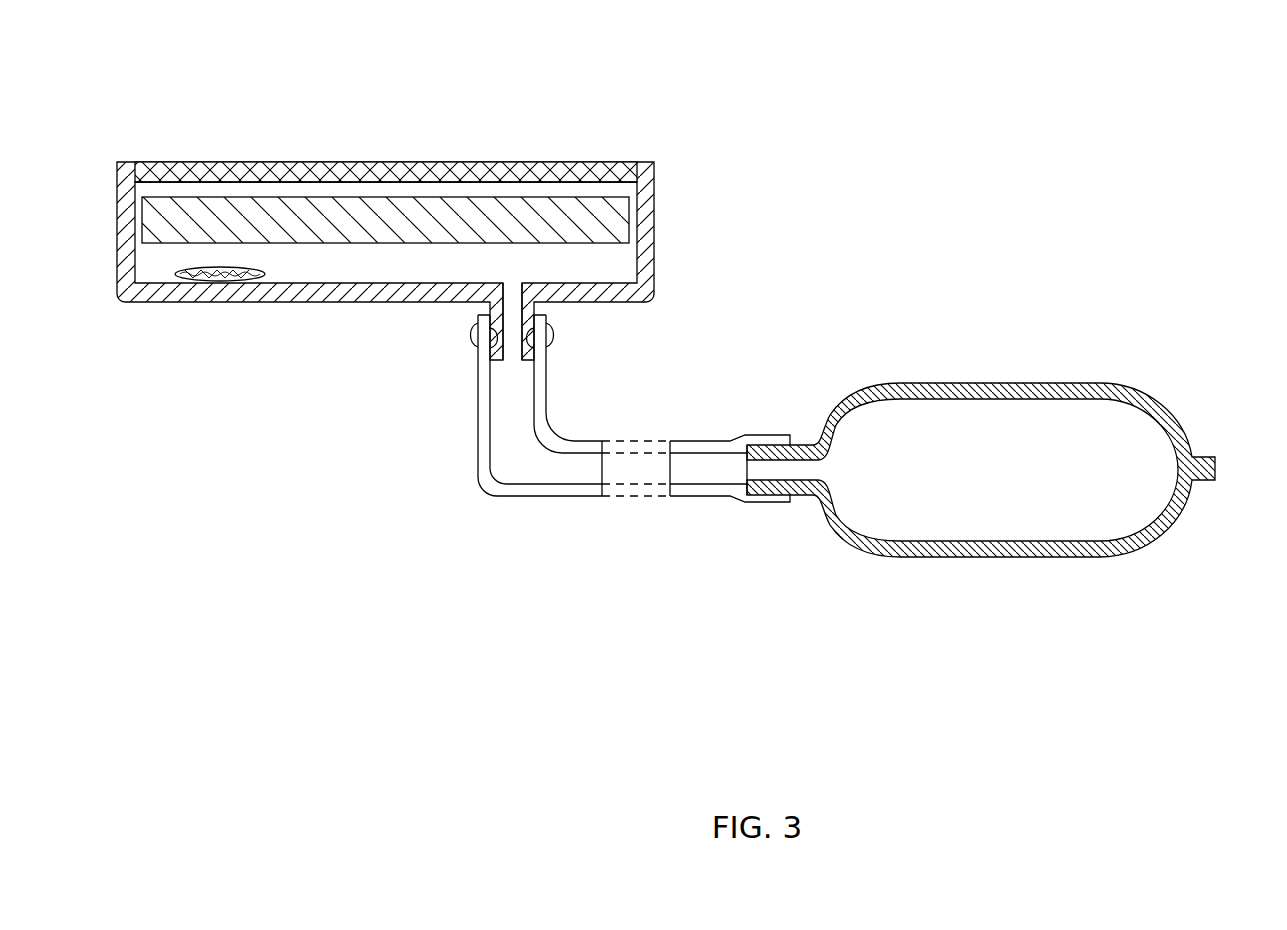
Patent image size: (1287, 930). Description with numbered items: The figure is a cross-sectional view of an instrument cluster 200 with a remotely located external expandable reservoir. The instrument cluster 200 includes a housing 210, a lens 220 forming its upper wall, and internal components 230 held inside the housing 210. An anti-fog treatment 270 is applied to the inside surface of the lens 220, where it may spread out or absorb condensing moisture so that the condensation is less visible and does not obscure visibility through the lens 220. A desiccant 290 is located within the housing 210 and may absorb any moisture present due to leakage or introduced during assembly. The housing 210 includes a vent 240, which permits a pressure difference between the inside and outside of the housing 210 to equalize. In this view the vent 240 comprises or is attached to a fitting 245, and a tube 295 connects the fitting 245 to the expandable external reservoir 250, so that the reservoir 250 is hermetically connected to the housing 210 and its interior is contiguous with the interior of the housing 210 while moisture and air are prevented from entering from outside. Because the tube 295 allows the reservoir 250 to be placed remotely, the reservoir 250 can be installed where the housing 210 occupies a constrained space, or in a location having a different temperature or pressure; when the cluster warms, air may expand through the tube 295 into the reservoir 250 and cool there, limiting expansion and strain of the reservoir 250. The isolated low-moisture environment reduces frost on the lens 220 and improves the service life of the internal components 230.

The instrument cluster 200 is at (666, 311).
The housing 210 is at (655, 193).
The lens 220 is at (570, 161).
The internal components 230 is at (231, 197).
The vent 240 is at (523, 298).
The fitting 245 is at (536, 305).
The expandable external reservoir 250 is at (1086, 383).
The anti-fog treatment 270 is at (390, 187).
The desiccant 290 is at (178, 272).
The tube 295 is at (481, 488).